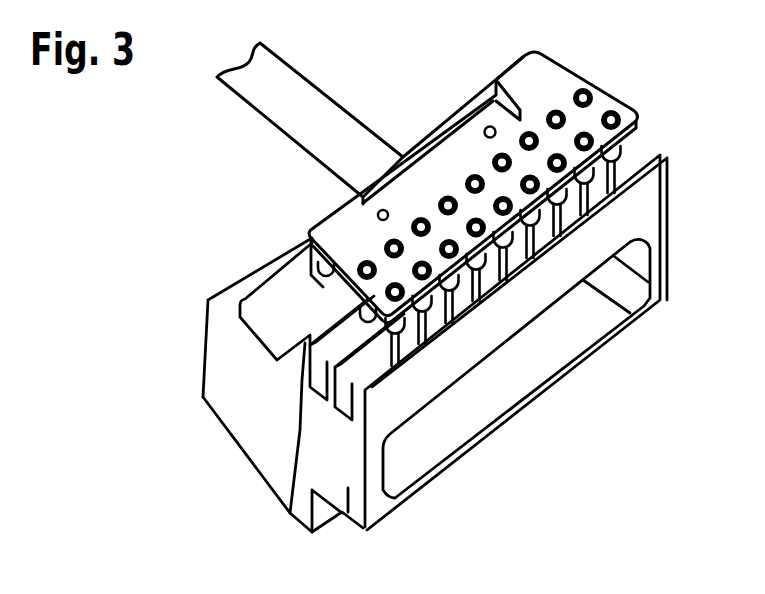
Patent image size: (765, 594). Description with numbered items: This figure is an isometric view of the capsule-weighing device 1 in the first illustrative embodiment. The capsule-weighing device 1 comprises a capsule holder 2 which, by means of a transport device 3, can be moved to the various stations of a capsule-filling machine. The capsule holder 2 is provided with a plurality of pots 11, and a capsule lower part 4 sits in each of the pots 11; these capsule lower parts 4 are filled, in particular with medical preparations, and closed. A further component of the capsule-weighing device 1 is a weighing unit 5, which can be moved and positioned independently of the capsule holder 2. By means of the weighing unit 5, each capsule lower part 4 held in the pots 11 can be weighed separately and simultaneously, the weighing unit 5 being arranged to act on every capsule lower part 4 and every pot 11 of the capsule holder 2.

The capsule-weighing device 1 is at (146, 229).
The capsule holder 2 is at (467, 240).
The transport device 3 is at (300, 92).
The capsule lower parts 4 is at (446, 203).
The weighing unit 5 is at (347, 493).
The pots 11 is at (608, 162).